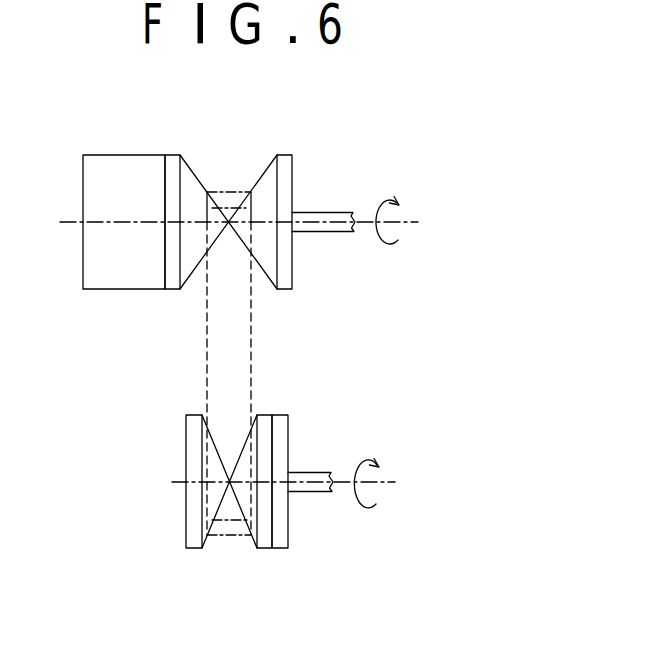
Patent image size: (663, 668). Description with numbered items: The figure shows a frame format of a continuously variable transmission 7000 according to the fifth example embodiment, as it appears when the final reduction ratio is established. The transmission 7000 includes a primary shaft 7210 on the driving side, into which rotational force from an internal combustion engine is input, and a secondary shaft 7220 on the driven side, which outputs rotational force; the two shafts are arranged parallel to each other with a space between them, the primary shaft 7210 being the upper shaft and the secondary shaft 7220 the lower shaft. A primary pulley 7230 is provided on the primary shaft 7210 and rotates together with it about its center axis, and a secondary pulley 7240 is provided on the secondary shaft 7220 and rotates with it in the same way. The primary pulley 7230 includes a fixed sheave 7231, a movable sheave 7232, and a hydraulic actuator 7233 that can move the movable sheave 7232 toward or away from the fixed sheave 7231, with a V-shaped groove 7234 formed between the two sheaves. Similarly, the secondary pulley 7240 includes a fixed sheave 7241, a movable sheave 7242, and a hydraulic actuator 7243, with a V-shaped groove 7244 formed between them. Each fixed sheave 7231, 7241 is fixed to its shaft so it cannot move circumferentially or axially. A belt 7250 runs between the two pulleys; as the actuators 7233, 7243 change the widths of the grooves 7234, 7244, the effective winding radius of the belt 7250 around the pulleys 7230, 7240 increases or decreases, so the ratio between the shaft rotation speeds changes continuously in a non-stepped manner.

The continuously variable transmission 7000 is at (398, 330).
The primary shaft 7210 is at (330, 212).
The secondary shaft 7220 is at (318, 472).
The primary pulley 7230 is at (303, 276).
The fixed sheave 7231 is at (288, 155).
The movable sheave 7232 is at (173, 155).
The hydraulic actuator 7233 is at (113, 155).
The V-shaped groove 7234 is at (240, 152).
The secondary pulley 7240 is at (182, 537).
The fixed sheave 7241 is at (192, 550).
The movable sheave 7242 is at (260, 550).
The hydraulic actuator 7243 is at (282, 550).
The V-shaped groove 7244 is at (223, 567).
The belt 7250 is at (258, 350).